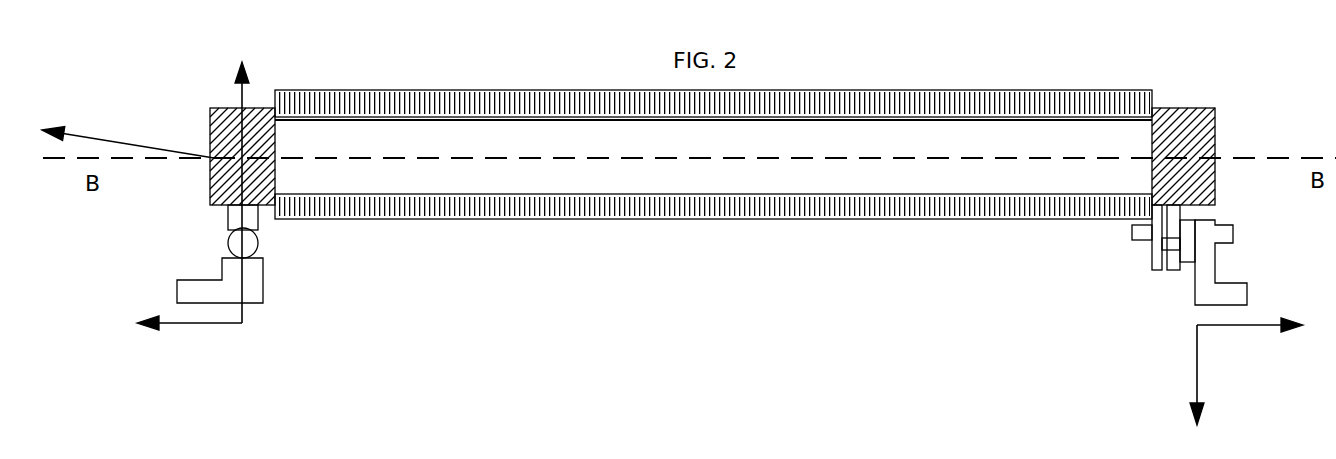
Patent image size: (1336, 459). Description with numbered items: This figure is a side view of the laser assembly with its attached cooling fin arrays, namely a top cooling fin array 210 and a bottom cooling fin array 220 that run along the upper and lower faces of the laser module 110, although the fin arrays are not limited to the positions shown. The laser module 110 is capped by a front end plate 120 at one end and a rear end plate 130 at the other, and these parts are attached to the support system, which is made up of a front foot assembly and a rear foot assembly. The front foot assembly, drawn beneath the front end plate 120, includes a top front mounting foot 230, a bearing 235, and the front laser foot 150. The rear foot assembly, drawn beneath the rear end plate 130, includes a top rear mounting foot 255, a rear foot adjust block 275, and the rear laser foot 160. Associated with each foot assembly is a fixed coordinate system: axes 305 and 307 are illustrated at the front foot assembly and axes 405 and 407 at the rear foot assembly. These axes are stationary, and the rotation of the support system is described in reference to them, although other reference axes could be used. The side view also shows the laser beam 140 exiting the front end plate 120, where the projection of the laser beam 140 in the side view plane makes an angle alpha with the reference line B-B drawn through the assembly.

The laser module 110 is at (713, 153).
The front end plate 120 is at (210, 108).
The rear end plate 130 is at (1215, 125).
The laser beam 140 is at (157, 143).
The front laser foot 150 is at (264, 301).
The rear laser foot 160 is at (1247, 290).
The top cooling fin array 210 is at (967, 90).
The bottom cooling fin array 220 is at (712, 219).
The top front mounting foot 230 is at (228, 220).
The bearing 235 is at (259, 245).
The top rear mounting foot 255 is at (1152, 260).
The rear foot adjust block 275 is at (1185, 265).
The axis 305 is at (189, 334).
The axis 307 is at (231, 183).
The axis 405 is at (1251, 339).
The axis 407 is at (1218, 375).